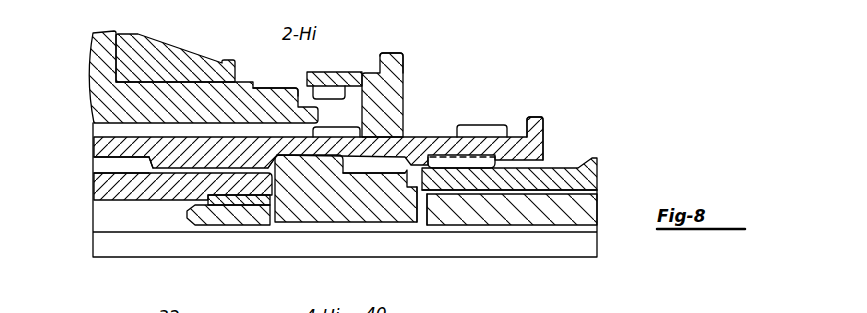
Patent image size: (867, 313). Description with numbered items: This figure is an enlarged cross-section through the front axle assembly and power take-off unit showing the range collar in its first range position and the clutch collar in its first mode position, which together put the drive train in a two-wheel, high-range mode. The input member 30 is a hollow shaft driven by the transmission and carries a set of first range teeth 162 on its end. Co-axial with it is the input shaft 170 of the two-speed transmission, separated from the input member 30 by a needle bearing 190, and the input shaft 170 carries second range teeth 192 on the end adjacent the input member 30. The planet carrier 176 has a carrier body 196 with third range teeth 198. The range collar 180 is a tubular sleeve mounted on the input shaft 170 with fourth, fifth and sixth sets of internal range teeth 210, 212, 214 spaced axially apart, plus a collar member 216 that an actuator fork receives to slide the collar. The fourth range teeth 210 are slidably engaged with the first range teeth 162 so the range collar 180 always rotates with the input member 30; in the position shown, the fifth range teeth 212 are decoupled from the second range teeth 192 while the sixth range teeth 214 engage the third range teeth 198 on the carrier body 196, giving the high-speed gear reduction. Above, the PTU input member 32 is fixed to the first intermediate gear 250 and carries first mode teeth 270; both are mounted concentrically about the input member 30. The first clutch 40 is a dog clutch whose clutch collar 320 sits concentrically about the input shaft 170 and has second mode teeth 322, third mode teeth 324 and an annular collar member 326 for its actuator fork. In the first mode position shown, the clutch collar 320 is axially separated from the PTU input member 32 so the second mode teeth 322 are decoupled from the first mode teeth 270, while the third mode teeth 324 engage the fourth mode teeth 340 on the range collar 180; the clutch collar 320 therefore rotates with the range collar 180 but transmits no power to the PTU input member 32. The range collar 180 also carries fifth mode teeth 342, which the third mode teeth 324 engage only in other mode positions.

The input member 30 is at (100, 193).
The PTU input member 32 is at (147, 82).
The first clutch 40 is at (385, 75).
The first range teeth 162 is at (103, 163).
The input shaft 170 is at (528, 216).
The planet carrier 176 is at (597, 173).
The range collar 180 is at (100, 147).
The needle bearing 190 is at (263, 200).
The second range teeth 192 is at (338, 166).
The carrier body 196 is at (597, 173).
The third range teeth 198 is at (506, 164).
The fourth range teeth 210 is at (186, 168).
The fifth range teeth 212 is at (267, 160).
The sixth range teeth 214 is at (413, 159).
The collar member 216 is at (546, 130).
The first intermediate gear 250 is at (93, 68).
The first mode teeth 270 is at (268, 94).
The clutch collar 320 is at (386, 81).
The second mode teeth 322 is at (322, 90).
The third mode teeth 324 is at (387, 175).
The collar member 326 is at (398, 66).
The fourth mode teeth 340 is at (350, 133).
The fifth mode teeth 342 is at (487, 133).